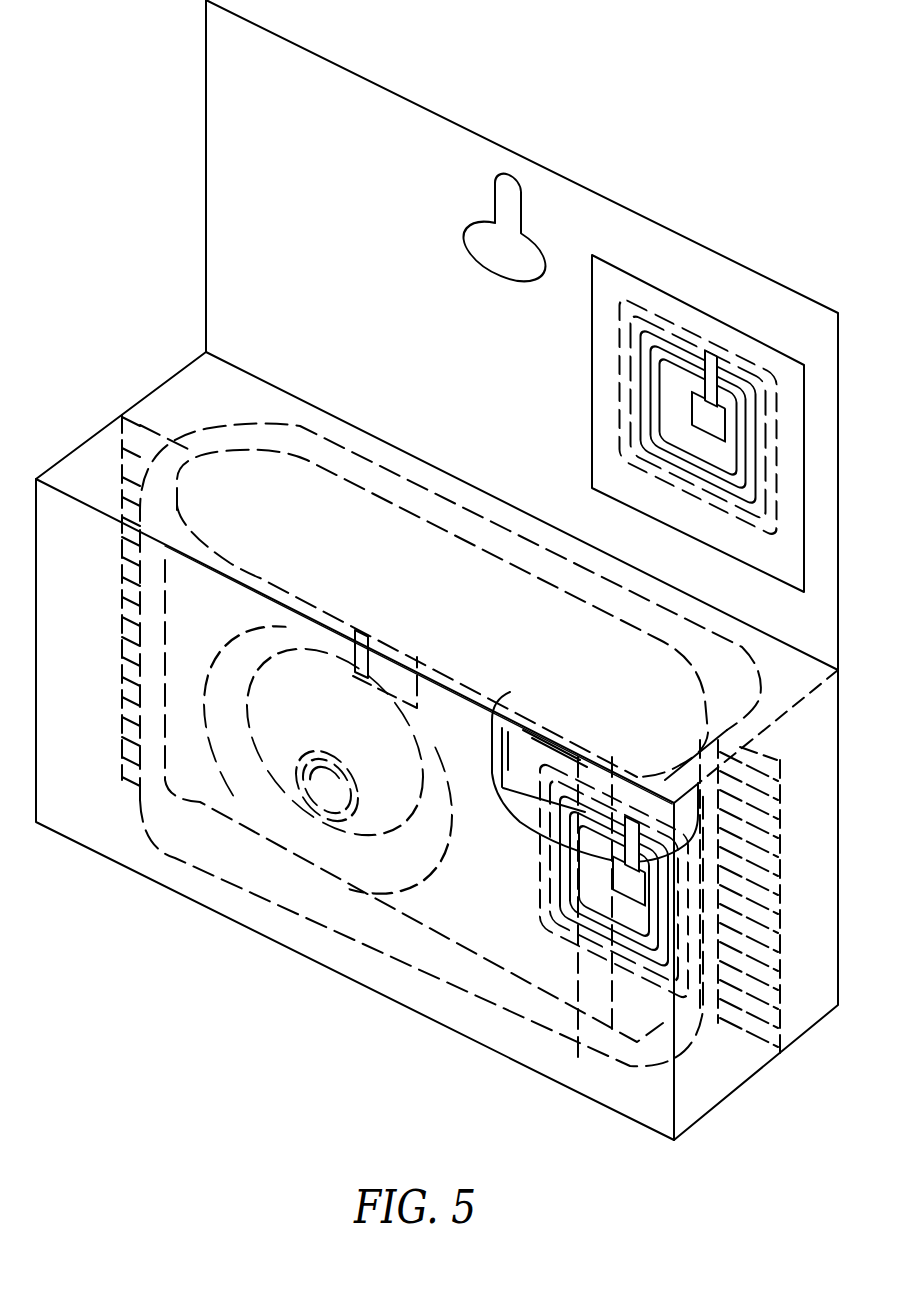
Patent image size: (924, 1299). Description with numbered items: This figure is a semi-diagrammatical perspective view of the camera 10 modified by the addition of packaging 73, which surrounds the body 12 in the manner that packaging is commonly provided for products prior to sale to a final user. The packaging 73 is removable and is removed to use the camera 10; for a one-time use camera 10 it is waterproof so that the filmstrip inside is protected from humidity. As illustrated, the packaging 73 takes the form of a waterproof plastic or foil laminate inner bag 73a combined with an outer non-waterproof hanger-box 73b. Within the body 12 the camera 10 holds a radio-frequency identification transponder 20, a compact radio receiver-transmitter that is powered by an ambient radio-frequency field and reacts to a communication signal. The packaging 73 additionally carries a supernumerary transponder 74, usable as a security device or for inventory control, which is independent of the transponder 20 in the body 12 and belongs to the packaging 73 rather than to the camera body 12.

The camera 10 is at (437, 570).
The body 12 is at (451, 740).
The radio-frequency identification transponder 20 is at (543, 927).
The packaging 73 is at (437, 570).
The inner bag 73a is at (177, 855).
The hanger-box 73b is at (425, 108).
The supernumerary transponder 74 is at (692, 330).